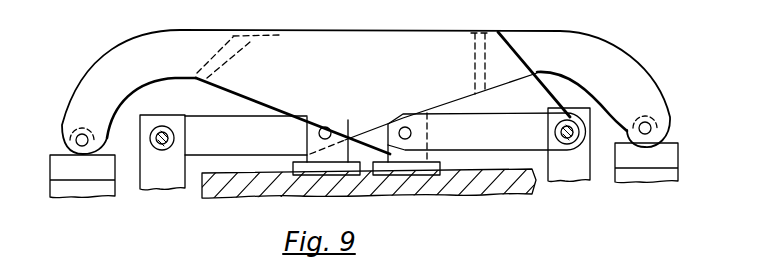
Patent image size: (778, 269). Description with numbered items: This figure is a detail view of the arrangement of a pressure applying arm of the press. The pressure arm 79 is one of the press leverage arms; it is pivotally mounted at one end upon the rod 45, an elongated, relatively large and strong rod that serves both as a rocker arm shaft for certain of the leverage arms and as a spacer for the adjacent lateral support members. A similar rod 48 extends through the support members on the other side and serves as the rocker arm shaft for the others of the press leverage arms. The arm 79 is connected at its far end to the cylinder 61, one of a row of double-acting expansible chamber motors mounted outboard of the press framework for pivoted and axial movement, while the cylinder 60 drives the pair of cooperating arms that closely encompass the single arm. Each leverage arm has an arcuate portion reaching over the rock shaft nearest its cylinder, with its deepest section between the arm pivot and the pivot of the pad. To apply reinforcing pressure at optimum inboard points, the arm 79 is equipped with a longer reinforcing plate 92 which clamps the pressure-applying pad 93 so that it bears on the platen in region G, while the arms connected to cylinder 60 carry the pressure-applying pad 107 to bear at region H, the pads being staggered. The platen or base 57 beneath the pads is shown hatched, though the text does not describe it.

The pressure arm 79 is at (605, 55).
The cylinder 60 is at (62, 189).
The cylinder 61 is at (672, 178).
The rod 45 is at (176, 139).
The rod 48 is at (570, 115).
The reinforcing plate 92 is at (239, 143).
The pressure-applying pad 93 is at (304, 160).
The pressure-applying pad 107 is at (416, 166).
The base plate 57 is at (470, 186).